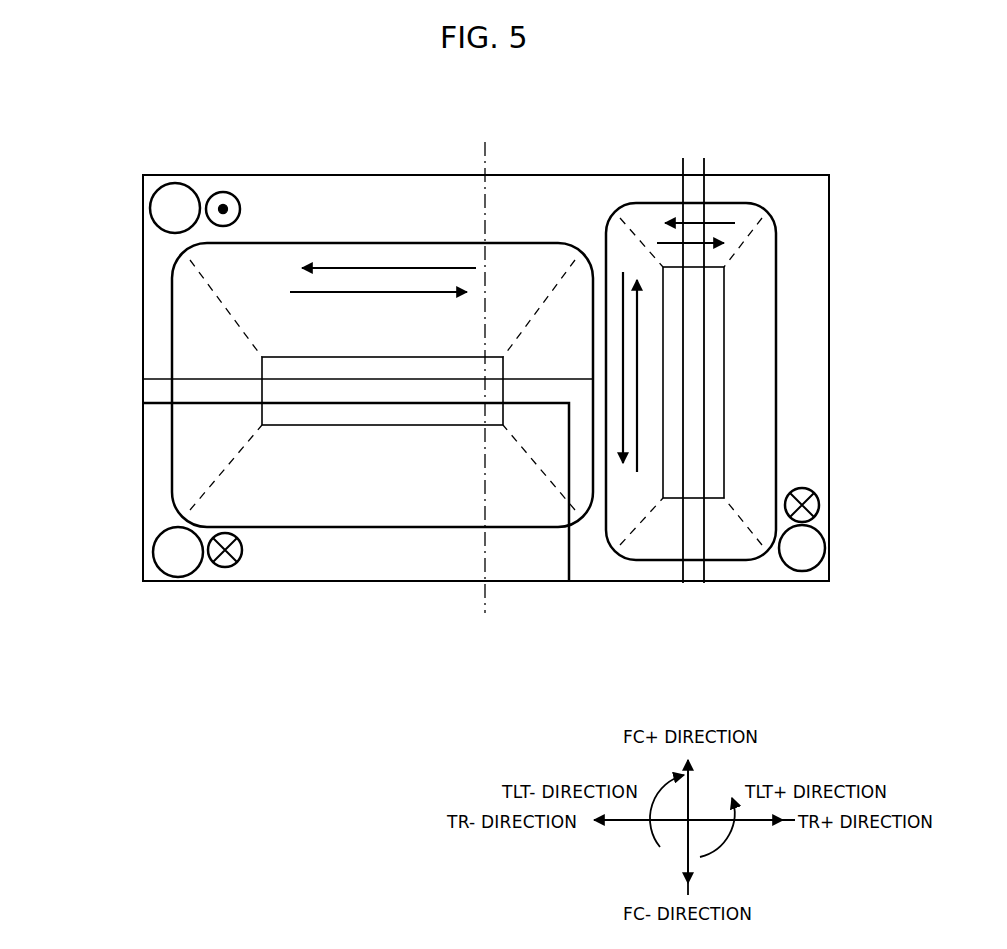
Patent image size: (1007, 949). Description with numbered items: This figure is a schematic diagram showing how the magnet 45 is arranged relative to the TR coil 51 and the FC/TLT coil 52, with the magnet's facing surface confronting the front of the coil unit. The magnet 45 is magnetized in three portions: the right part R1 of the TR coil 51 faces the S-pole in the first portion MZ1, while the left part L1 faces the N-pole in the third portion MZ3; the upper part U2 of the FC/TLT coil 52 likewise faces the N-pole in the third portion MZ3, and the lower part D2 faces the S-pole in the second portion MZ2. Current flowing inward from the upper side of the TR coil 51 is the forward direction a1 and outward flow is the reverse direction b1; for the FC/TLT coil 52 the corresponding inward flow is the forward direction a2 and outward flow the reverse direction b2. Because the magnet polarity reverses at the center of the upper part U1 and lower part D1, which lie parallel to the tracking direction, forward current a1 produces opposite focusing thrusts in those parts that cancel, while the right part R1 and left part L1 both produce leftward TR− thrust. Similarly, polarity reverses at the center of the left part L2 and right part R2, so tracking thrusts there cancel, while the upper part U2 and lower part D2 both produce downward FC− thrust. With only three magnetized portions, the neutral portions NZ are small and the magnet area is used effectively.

The magnet 45 is at (592, 175).
The TR coil 51 is at (777, 480).
The FC/TLT coil 52 is at (175, 507).
The forward direction a1 is at (752, 225).
The reverse direction b1 is at (847, 428).
The forward direction a2 is at (443, 295).
The reverse direction b2 is at (303, 270).
The upper part of TR coil U1 is at (748, 232).
The left part of TR coil L1 is at (627, 517).
The right part of TR coil R1 is at (763, 333).
The lower part of TR coil D1 is at (735, 547).
The upper part of FC/TLT coil U2 is at (215, 275).
The left part of FC/TLT coil L2 is at (183, 345).
The right part of FC/TLT coil R2 is at (537, 453).
The lower part of FC/TLT coil D2 is at (380, 505).
The first portion of magnet MZ1 is at (805, 247).
The second portion of magnet MZ2 is at (155, 444).
The third portion of magnet MZ3 is at (153, 293).
The neutral portions NZ is at (697, 575).